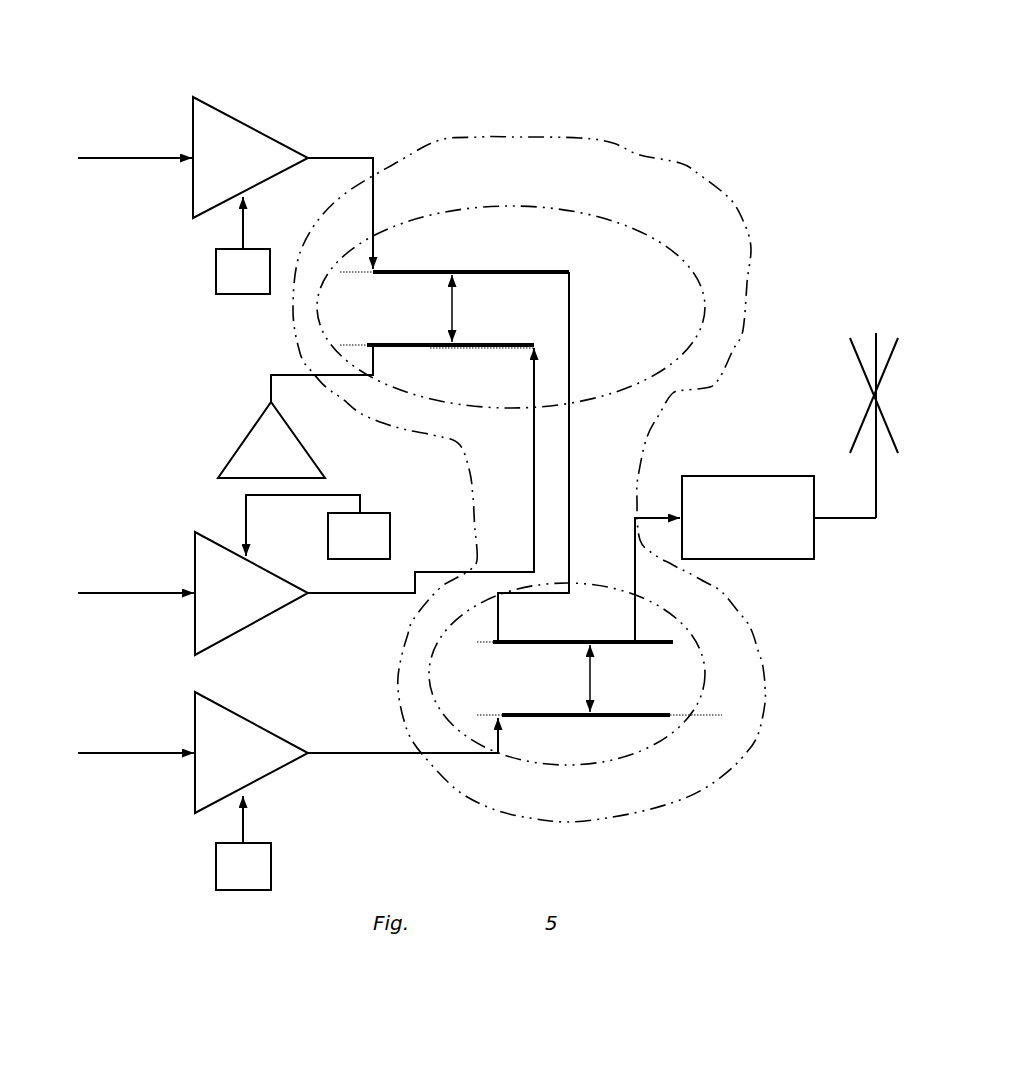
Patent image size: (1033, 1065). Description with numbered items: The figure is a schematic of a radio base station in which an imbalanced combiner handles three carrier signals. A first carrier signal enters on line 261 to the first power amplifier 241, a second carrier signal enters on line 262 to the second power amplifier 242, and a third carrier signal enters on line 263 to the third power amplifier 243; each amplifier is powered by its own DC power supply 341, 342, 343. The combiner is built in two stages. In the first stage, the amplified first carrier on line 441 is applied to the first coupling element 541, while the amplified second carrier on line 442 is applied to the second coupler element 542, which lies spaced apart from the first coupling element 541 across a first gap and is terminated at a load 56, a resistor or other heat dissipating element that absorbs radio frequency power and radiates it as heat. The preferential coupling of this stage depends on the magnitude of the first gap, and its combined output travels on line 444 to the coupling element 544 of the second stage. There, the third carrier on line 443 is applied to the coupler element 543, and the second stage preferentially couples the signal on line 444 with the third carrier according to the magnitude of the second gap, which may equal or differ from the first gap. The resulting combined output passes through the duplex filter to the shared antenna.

The first power amplifier 241 is at (193, 97).
The second power amplifier 242 is at (195, 532).
The third power amplifier 243 is at (195, 692).
The line 261 is at (100, 158).
The line 262 is at (100, 593).
The line 263 is at (100, 753).
The DC power supply 341 is at (216, 275).
The DC power supply 342 is at (390, 545).
The DC power supply 343 is at (216, 868).
The line 441 is at (373, 158).
The line 442 is at (353, 597).
The line 443 is at (371, 753).
The line 444 is at (569, 506).
The first coupling element 541 is at (384, 272).
The second coupler element 542 is at (390, 349).
The coupler element 543 is at (545, 718).
The coupling element 544 is at (521, 641).
The load 56 is at (310, 452).